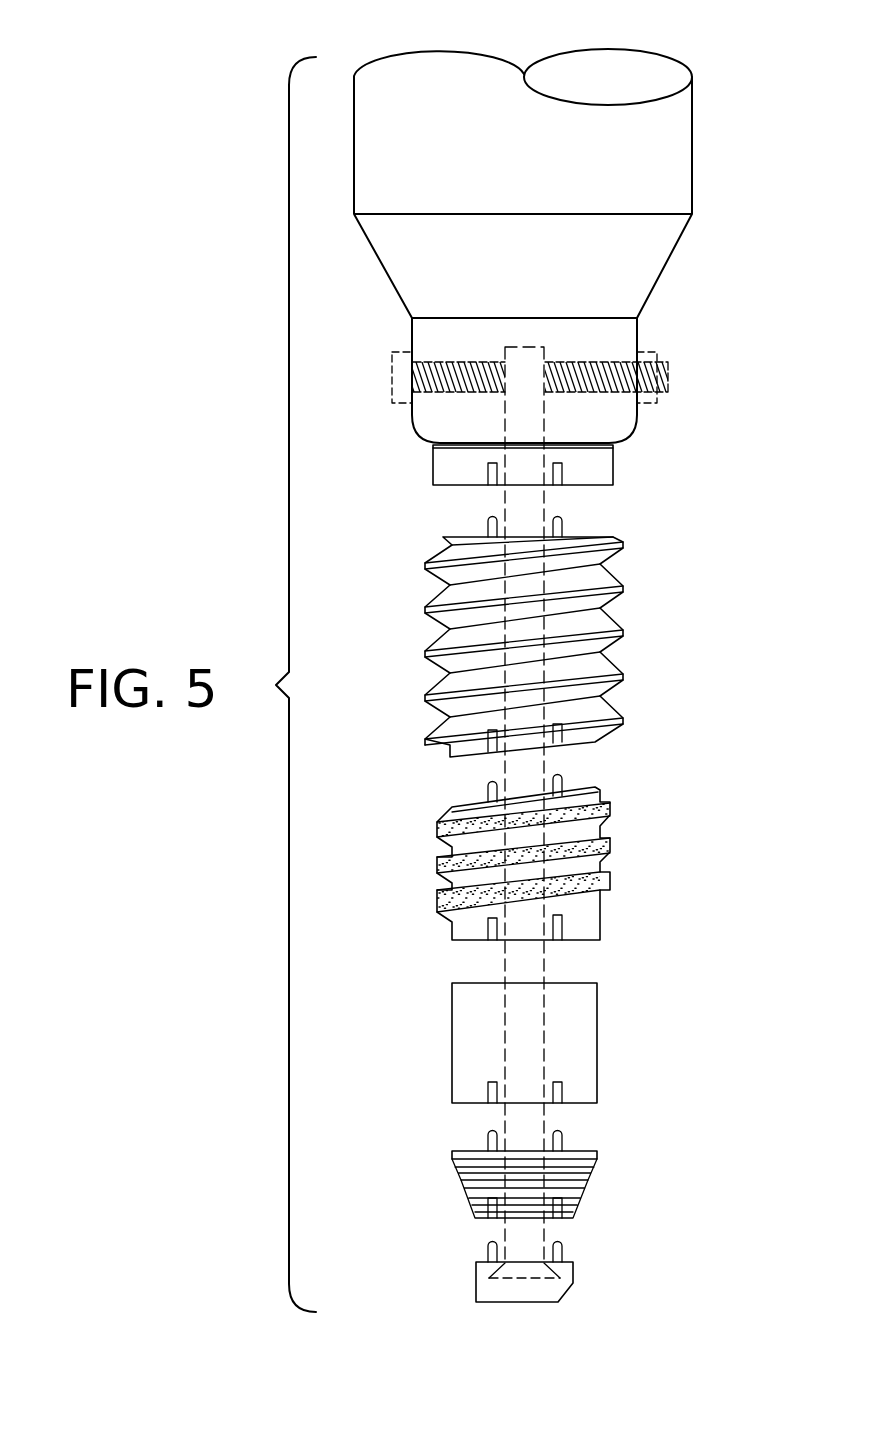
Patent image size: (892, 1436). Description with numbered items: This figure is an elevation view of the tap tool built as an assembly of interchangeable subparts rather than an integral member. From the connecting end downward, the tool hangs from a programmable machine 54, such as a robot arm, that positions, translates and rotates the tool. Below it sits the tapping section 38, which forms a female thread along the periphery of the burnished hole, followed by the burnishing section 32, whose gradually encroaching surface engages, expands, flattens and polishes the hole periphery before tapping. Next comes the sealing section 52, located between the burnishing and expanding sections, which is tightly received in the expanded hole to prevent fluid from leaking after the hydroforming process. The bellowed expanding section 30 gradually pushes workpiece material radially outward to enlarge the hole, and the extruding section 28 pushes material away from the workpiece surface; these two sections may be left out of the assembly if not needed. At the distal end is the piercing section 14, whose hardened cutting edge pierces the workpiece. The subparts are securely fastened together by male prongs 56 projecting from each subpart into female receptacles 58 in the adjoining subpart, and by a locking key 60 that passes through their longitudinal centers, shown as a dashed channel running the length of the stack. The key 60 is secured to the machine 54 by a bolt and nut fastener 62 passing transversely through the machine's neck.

The programmable machine 54 is at (680, 314).
The bolt and nut fastener 62 is at (673, 397).
The female receptacles 58 is at (562, 471).
The male prongs 56 is at (562, 522).
The tapping section 38 is at (675, 655).
The locking key 60 is at (562, 775).
The burnishing section 32 is at (663, 895).
The sealing section 52 is at (663, 1064).
The expanding section 30 is at (600, 1170).
The extruding section 28 is at (583, 1206).
The piercing section 14 is at (580, 1288).